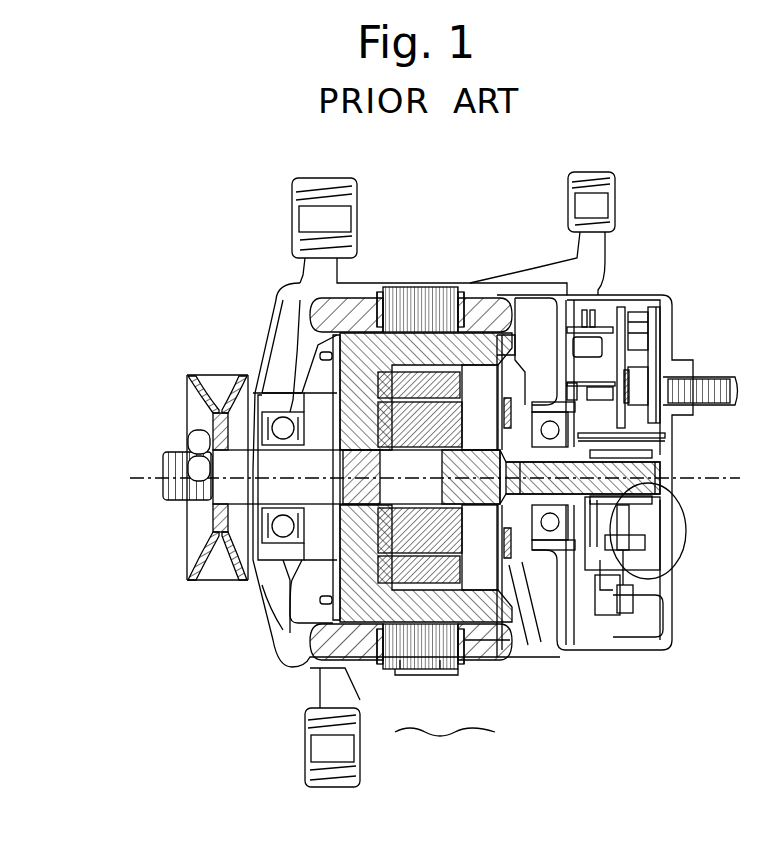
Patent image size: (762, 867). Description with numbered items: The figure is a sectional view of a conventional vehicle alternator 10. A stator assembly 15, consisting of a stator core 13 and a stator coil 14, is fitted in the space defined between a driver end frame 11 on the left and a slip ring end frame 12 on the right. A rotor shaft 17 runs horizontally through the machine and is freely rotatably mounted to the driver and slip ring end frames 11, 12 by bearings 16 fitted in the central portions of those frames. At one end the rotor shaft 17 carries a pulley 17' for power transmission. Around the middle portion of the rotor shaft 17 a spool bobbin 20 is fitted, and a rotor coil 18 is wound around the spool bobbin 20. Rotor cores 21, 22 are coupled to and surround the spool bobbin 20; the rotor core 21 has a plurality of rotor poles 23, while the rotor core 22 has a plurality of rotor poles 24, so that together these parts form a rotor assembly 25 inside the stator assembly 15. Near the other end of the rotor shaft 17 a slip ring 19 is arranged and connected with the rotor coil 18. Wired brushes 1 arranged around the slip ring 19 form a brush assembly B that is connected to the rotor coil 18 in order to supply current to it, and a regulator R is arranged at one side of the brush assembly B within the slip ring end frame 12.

The conventional alternator 10 is at (162, 302).
The driver end frame 11 is at (275, 643).
The slip ring end frame 12 is at (605, 262).
The stator core 13 is at (417, 287).
The stator coil 14 is at (462, 290).
The stator assembly 15 is at (466, 180).
The bearings 16 is at (228, 523).
The rotor shaft 17 is at (153, 481).
The pulley 17' is at (185, 501).
The rotor coil 18 is at (410, 672).
The slip ring 19 is at (655, 456).
The spool bobbin 20 is at (438, 670).
The rotor core 21 is at (300, 640).
The rotor core 22 is at (352, 358).
The rotor poles 23 is at (485, 660).
The rotor poles 24 is at (450, 368).
The rotor assembly 25 is at (445, 747).
The wired brushes 1 is at (628, 532).
The brush assembly B is at (680, 532).
The regulator R is at (577, 560).